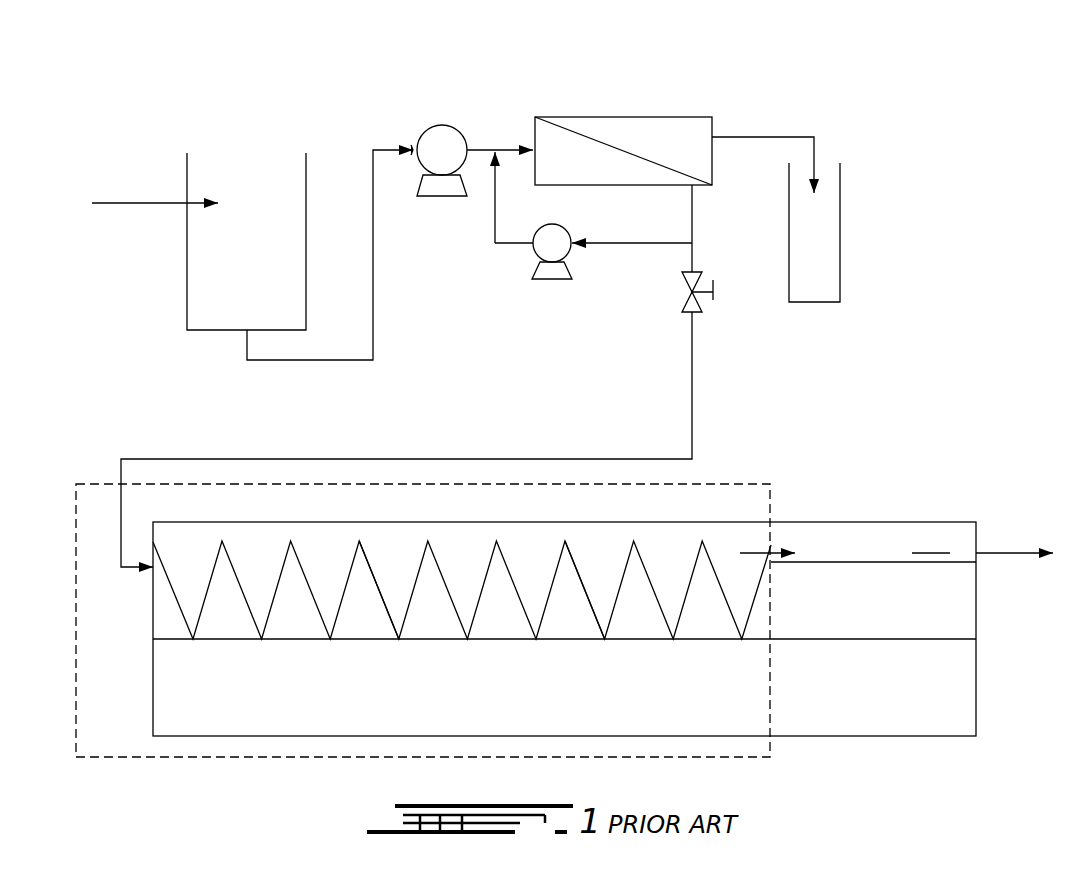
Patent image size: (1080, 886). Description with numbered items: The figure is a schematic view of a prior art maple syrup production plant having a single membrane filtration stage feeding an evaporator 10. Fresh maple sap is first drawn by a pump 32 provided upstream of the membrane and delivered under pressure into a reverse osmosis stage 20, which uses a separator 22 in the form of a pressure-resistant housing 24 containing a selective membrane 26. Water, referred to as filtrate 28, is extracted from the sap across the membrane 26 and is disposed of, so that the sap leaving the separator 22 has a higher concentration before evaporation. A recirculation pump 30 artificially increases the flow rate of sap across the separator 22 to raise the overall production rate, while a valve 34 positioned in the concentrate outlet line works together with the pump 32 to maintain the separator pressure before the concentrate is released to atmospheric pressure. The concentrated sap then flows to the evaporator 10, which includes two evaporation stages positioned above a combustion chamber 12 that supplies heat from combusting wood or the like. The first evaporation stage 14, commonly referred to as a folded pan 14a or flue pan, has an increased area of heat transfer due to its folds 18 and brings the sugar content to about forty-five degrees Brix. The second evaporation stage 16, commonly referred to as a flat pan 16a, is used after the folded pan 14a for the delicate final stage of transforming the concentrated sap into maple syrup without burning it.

The evaporator 10 is at (952, 446).
The combustion chamber 12 is at (422, 710).
The first evaporation stage 14 is at (717, 522).
The folded pan 14a is at (385, 613).
The second evaporation stage 16 is at (866, 522).
The flat pan 16a is at (930, 541).
The folds 18 is at (591, 615).
The reverse osmosis stage 20 is at (807, 161).
The separator 22 is at (653, 95).
The pressure-resistant housing 24 is at (572, 117).
The selective membrane 26 is at (640, 157).
The filtrate 28 is at (795, 137).
The recirculation pump 30 is at (535, 250).
The pump 32 is at (442, 125).
The valve 34 is at (682, 297).